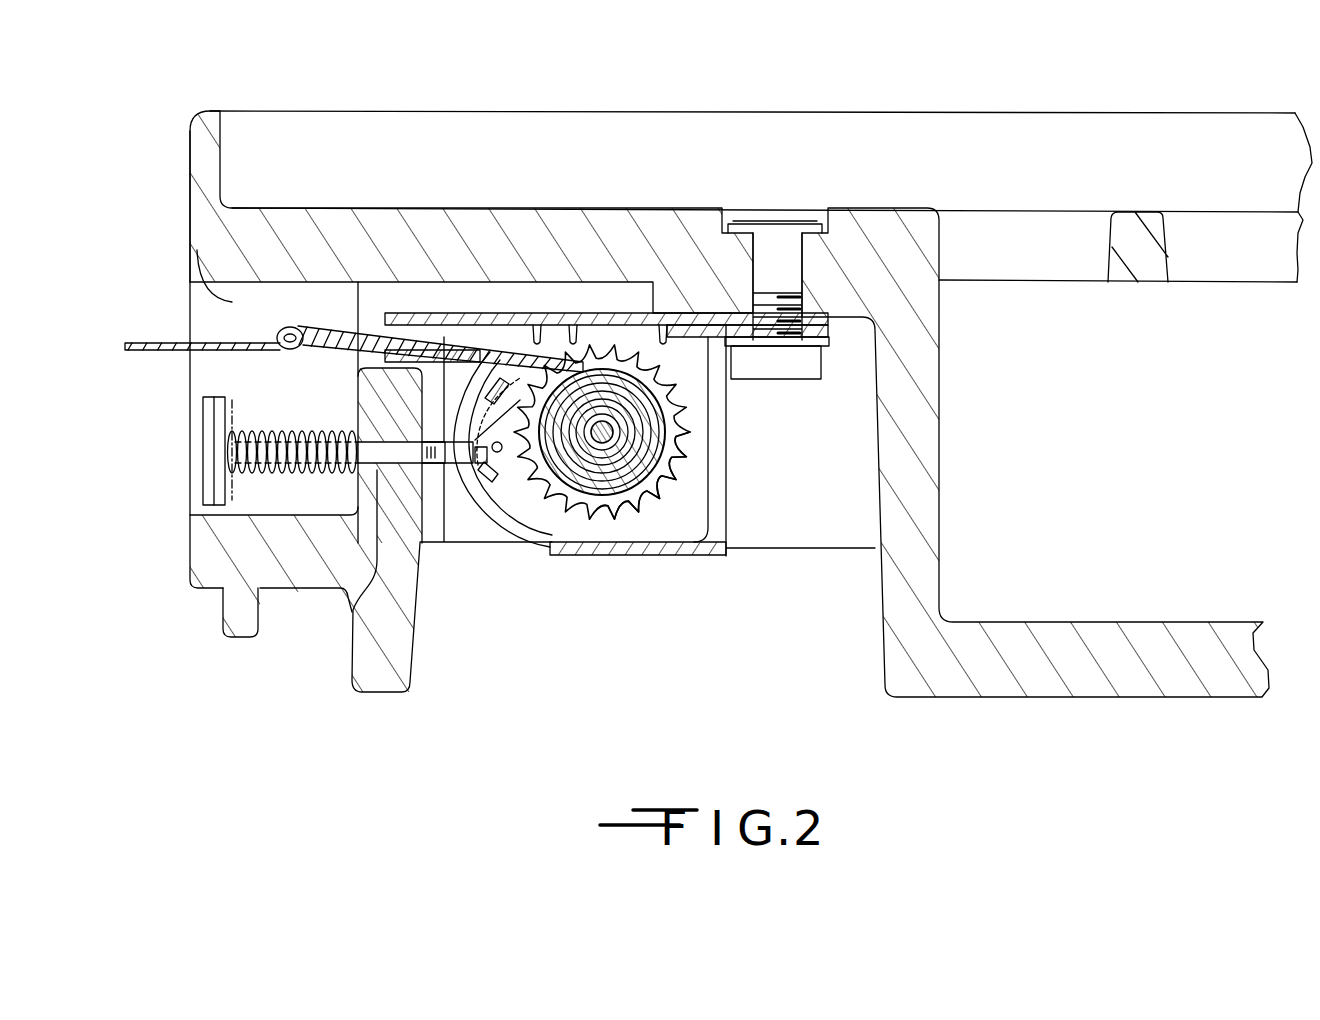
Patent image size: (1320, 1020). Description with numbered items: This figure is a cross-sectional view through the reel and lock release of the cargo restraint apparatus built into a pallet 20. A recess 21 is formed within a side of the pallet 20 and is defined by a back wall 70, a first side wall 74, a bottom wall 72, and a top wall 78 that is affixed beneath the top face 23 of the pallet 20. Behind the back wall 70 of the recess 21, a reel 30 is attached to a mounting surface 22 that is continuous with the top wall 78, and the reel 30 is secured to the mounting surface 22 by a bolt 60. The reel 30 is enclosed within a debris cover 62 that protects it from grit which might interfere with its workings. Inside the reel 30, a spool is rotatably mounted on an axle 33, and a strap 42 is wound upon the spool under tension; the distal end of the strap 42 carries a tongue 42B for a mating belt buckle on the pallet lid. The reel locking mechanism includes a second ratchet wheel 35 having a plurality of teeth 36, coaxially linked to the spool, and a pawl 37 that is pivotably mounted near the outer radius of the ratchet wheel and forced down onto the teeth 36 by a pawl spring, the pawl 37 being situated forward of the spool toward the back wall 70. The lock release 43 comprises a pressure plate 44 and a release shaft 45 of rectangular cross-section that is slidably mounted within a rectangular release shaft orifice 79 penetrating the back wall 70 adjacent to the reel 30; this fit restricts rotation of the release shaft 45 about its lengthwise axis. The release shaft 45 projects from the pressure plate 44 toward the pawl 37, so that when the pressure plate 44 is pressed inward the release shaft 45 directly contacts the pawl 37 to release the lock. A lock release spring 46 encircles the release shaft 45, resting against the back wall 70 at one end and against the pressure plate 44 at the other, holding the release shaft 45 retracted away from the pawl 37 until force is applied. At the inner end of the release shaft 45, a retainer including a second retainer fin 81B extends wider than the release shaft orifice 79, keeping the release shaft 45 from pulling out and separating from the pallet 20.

The pallet 20 is at (170, 104).
The recess 21 is at (164, 306).
The mounting surface 22 is at (718, 306).
The top face 23 is at (605, 110).
The reel 30 is at (610, 578).
The axle 33 is at (612, 432).
The second ratchet wheel 35 is at (580, 508).
The teeth 36 is at (627, 522).
The pawl 37 is at (515, 500).
The strap 42 is at (321, 332).
The tongue 42B is at (150, 353).
The lock release 43 is at (224, 379).
The pressure plate 44 is at (207, 449).
The release shaft 45 is at (263, 475).
The lock release spring 46 is at (240, 455).
The bolt 60 is at (780, 273).
The debris cover 62 is at (690, 553).
The back wall 70 is at (402, 530).
The bottom wall 72 is at (247, 557).
The first side wall 74 is at (197, 250).
The top wall 78 is at (363, 257).
The release shaft orifice 79 is at (385, 555).
The second retainer fin 81B is at (443, 465).